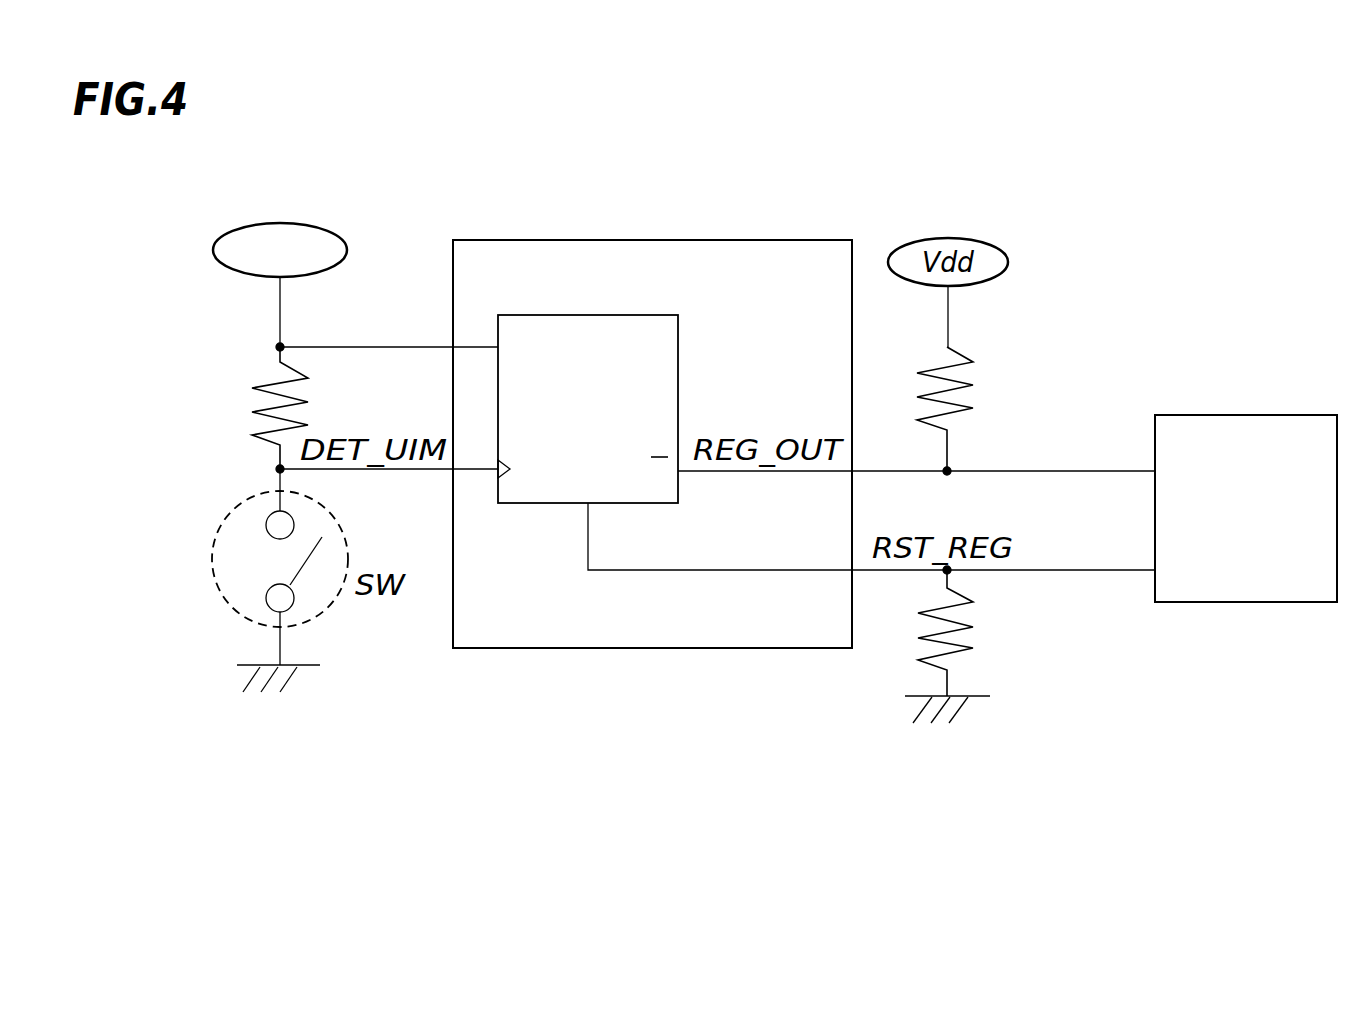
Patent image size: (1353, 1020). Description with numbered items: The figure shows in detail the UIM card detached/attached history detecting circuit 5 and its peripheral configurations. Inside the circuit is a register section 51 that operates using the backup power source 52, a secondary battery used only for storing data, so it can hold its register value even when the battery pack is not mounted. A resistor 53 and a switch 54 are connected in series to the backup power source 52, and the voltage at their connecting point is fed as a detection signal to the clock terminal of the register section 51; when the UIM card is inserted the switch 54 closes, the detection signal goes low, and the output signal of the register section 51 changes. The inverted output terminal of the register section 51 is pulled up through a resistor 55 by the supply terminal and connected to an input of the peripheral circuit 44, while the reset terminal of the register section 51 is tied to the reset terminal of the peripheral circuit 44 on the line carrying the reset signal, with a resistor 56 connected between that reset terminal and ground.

The UIM card detached/attached history detecting circuit 5 is at (477, 239).
The peripheral circuit 44 is at (1257, 415).
The register section 51 is at (657, 315).
The backup power source 52 is at (305, 223).
The resistor 53 is at (252, 410).
The switch 54 is at (215, 533).
The resistor 55 is at (970, 385).
The resistor 56 is at (973, 648).